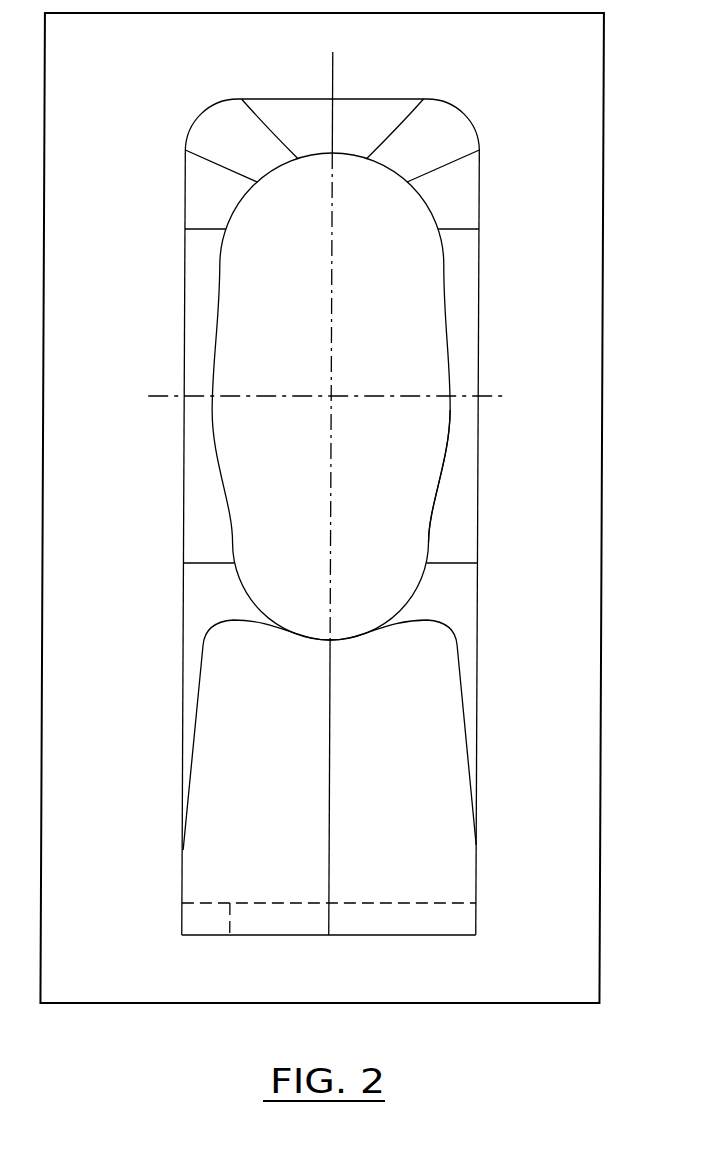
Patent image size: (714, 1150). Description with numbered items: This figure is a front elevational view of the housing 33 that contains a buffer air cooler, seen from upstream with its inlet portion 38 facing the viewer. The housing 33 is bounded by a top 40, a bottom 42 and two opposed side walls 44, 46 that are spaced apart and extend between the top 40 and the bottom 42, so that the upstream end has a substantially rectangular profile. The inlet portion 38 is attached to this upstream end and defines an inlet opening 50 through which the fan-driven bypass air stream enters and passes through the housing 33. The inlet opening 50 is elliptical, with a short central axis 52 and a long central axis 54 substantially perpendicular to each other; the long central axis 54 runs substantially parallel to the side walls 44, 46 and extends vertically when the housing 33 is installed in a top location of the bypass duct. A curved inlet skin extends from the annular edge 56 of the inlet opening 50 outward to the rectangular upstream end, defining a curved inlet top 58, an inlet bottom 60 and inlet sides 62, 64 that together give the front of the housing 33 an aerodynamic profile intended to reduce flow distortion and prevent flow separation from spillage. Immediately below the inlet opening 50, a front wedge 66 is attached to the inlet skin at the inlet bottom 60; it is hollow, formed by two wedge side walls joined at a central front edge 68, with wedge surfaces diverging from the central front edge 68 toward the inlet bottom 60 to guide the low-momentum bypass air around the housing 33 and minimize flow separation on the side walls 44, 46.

The housing 33 is at (482, 594).
The inlet portion 38 is at (463, 275).
The top 40 is at (395, 99).
The bottom 42 is at (234, 935).
The side wall 44 is at (481, 350).
The side wall 46 is at (187, 347).
The inlet opening 50 is at (326, 327).
The short central axis 52 is at (497, 396).
The long central axis 54 is at (334, 86).
The annular edge 56 is at (424, 200).
The inlet top 58 is at (292, 113).
The inlet bottom 60 is at (476, 768).
The inlet side 62 is at (463, 315).
The inlet side 64 is at (201, 313).
The front wedge 66 is at (451, 848).
The central front edge 68 is at (336, 767).